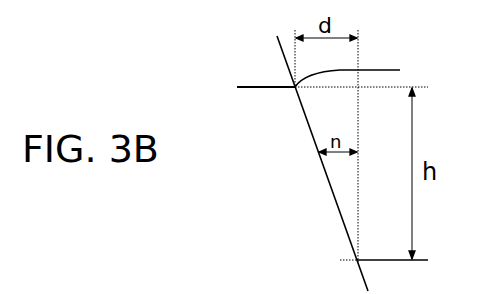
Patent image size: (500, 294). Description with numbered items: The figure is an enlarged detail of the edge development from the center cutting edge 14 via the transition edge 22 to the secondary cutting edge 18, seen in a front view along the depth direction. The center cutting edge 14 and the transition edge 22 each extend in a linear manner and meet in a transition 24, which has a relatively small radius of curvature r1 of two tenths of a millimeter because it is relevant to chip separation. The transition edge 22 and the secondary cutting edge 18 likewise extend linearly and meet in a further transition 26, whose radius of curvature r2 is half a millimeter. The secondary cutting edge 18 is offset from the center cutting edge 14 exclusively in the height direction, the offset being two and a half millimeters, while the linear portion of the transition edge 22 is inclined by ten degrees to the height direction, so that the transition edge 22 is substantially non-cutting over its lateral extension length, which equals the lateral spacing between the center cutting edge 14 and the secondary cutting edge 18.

The center cutting edge 14 is at (254, 74).
The transition 24 is at (400, 70).
The transition edge 22 is at (332, 190).
The transition 26 is at (357, 259).
The secondary cutting edge 18 is at (389, 262).
The radius of curvature r1 is at (291, 93).
The radius of curvature r2 is at (359, 257).